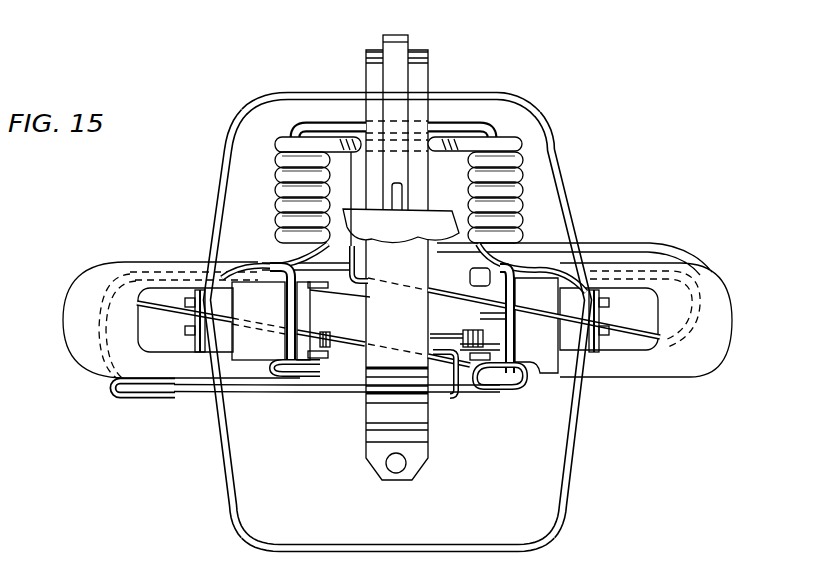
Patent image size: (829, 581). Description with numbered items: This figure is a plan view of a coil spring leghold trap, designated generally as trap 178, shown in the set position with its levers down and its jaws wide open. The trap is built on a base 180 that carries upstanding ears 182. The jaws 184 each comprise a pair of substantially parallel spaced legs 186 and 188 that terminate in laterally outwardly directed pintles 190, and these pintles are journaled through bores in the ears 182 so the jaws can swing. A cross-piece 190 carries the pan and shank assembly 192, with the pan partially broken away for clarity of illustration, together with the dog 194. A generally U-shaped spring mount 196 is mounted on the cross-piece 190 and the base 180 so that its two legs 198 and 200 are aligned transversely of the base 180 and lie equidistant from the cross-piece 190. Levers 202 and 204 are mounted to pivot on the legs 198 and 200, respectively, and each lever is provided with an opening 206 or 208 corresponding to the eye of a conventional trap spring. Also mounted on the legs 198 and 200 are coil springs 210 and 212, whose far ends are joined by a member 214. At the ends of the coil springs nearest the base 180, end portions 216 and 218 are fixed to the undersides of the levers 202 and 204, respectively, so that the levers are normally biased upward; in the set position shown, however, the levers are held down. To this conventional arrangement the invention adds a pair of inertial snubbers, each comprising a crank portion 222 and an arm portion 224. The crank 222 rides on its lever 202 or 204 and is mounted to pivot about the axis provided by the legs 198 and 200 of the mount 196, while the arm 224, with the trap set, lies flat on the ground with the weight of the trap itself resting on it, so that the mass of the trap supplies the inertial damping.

The trap 178 is at (606, 82).
The base 180 is at (567, 337).
The upstanding ears 182 is at (182, 292).
The jaws 184 is at (476, 95).
The leg 186 is at (574, 466).
The leg 188 is at (232, 502).
The pintles / cross-piece 190 is at (410, 325).
The pan and shank assembly 192 is at (418, 228).
The dog 194 is at (399, 44).
The spring mount 196 is at (451, 128).
The leg of spring mount 198 is at (496, 132).
The leg of spring mount 200 is at (292, 128).
The lever 202 is at (713, 356).
The lever 204 is at (110, 310).
The opening 206 is at (556, 303).
The opening 208 is at (233, 304).
The coil spring 210 is at (523, 180).
The coil spring 212 is at (272, 182).
The member 214 is at (354, 140).
The end portion 216 is at (538, 266).
The end portion 218 is at (270, 265).
The crank portion 222 is at (288, 341).
The arm portion 224 is at (330, 395).